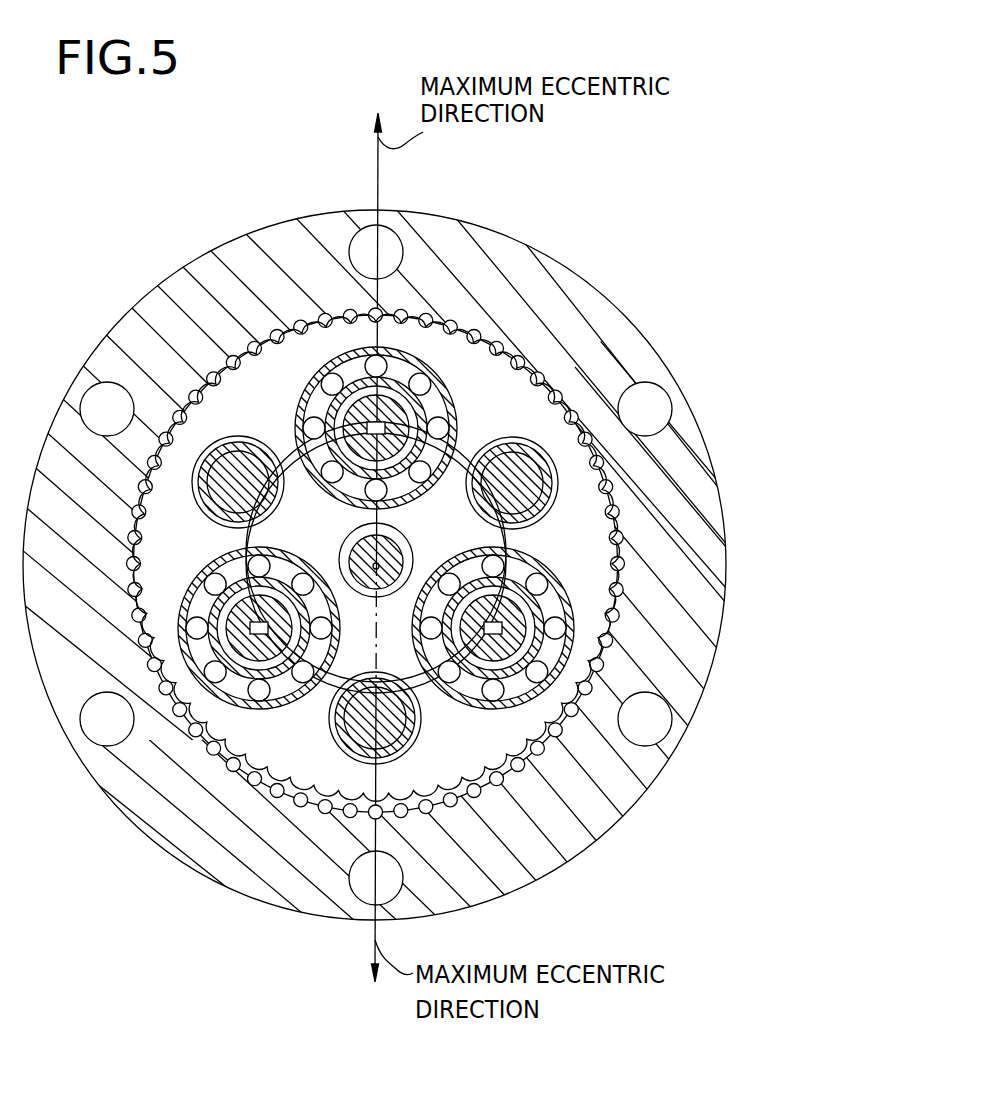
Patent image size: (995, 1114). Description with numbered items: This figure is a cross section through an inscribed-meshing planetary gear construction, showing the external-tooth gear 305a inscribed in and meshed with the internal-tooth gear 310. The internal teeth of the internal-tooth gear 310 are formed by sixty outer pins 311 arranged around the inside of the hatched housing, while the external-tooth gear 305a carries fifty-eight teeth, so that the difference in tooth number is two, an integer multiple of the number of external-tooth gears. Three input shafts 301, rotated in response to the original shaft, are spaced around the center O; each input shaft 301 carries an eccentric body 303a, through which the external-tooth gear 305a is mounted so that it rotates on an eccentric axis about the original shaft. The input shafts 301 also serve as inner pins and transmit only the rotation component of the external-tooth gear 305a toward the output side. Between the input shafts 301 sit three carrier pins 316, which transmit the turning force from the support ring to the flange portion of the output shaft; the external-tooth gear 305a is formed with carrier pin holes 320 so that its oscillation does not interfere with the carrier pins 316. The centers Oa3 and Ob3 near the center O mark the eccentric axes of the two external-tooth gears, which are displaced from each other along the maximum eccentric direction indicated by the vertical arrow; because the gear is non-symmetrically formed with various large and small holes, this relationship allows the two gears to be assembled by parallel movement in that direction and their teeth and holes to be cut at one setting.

The internal-tooth gear 310 is at (440, 233).
The outer pins 311 is at (457, 318).
The external-tooth gear 305a is at (600, 546).
The eccentric body 303a is at (446, 438).
The input shaft 301 is at (432, 403).
The carrier pin hole 320 is at (252, 436).
The carrier pin 316 is at (528, 466).
The center of internal gear O is at (404, 560).
The center of external gear 305a Oa3 is at (362, 544).
The center of external gear 305b Ob3 is at (389, 598).